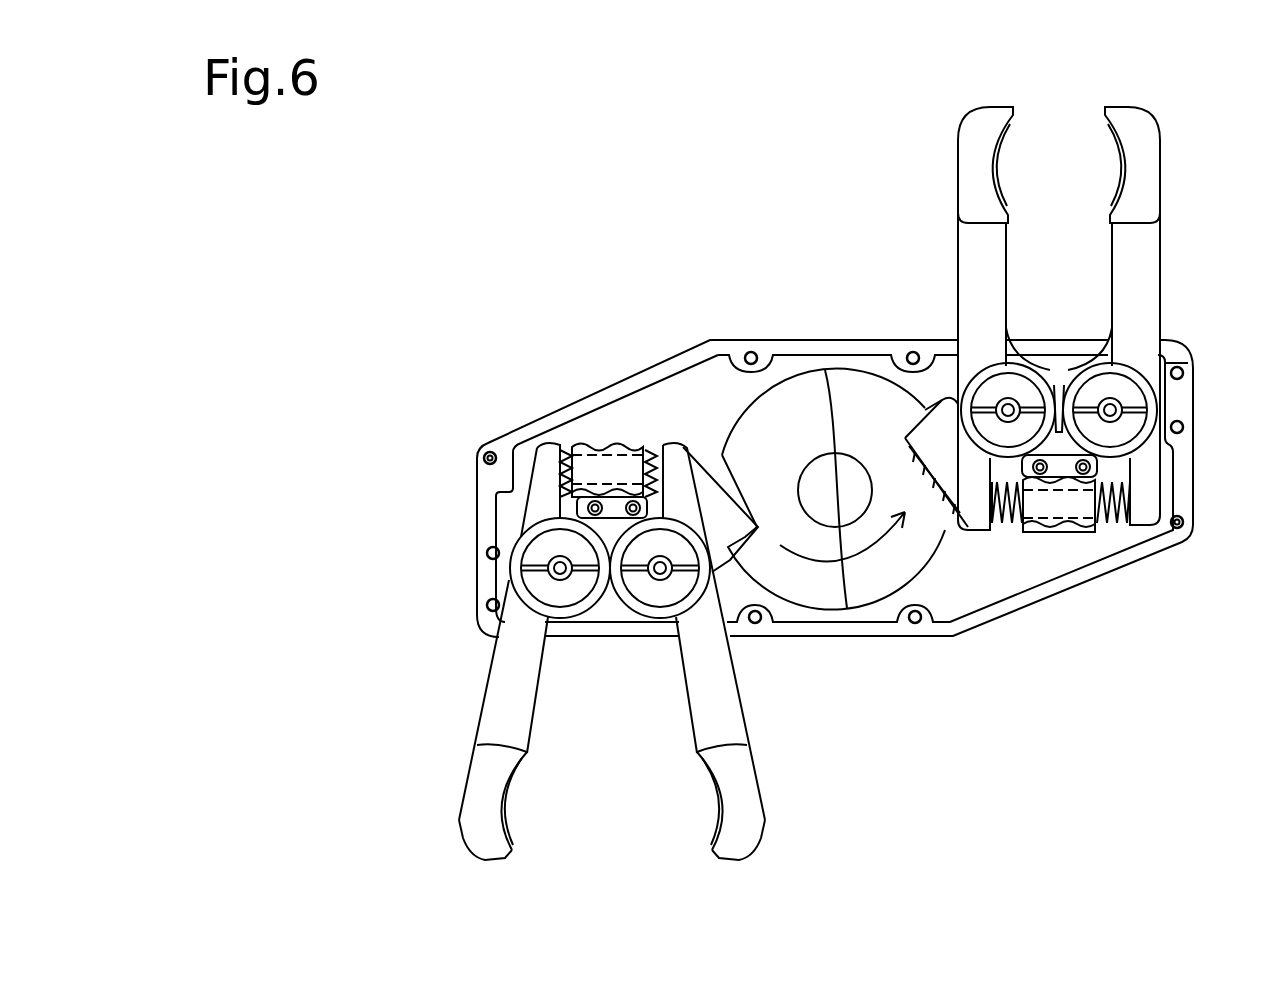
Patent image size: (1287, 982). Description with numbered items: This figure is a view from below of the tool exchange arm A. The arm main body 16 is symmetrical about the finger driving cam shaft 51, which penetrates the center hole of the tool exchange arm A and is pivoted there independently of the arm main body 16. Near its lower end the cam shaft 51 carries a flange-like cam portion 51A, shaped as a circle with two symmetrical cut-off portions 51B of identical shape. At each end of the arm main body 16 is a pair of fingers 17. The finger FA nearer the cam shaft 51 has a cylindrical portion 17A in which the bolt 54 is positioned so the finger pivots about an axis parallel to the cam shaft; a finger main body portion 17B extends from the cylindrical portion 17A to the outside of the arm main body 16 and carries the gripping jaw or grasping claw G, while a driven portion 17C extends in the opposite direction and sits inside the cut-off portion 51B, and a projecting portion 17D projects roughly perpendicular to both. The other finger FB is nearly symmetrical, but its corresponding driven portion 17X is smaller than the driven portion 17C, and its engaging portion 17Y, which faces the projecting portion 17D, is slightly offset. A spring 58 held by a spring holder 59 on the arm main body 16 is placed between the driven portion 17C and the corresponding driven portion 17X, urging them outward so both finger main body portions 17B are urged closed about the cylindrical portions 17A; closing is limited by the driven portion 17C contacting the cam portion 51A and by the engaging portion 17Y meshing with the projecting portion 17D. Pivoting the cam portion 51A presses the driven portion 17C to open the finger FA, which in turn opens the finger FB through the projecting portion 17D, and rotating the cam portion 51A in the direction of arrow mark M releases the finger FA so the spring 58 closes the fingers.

The arm main body 16 is at (497, 437).
The pair of fingers 17 is at (1160, 112).
The cylindrical portion 17A is at (983, 360).
The finger main body portion 17B is at (957, 254).
The driven portion 17C is at (925, 410).
The projecting portion 17D is at (1057, 392).
The corresponding driven portion 17X is at (1173, 465).
The engaging portion 17Y is at (1065, 388).
The finger driving cam shaft 51 is at (713, 419).
The cam portion 51A is at (802, 370).
The cut-off portion 51B is at (970, 530).
The bolt 54 is at (530, 548).
The spring 58 is at (1005, 522).
The spring holder 59 is at (1090, 530).
The tool exchange arm A is at (585, 320).
The gripping jaw or grasping claw G is at (1112, 157).
The arrow mark M is at (848, 520).
The finger FA is at (939, 141).
The finger FB is at (1193, 147).